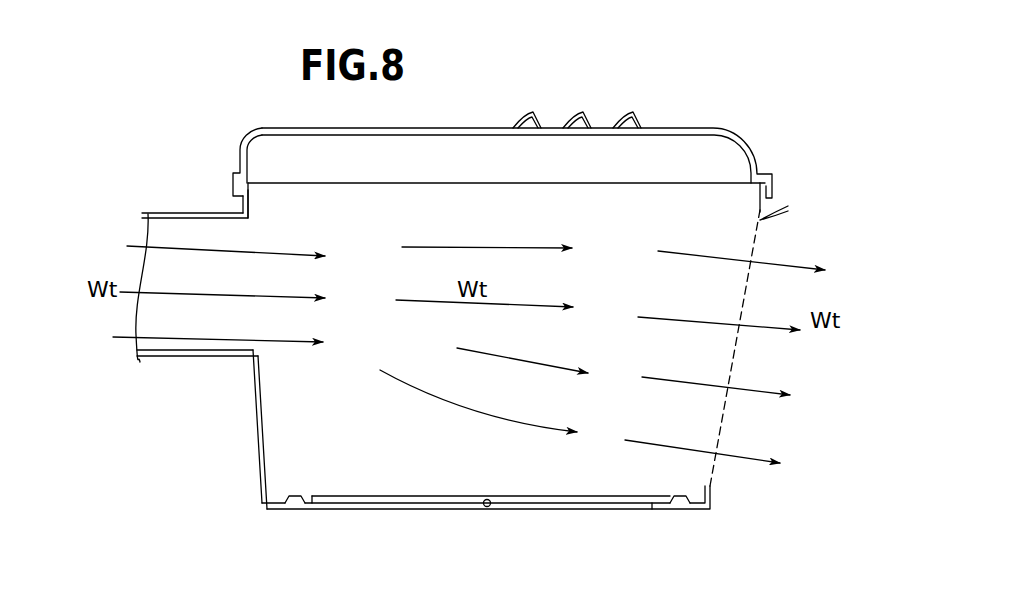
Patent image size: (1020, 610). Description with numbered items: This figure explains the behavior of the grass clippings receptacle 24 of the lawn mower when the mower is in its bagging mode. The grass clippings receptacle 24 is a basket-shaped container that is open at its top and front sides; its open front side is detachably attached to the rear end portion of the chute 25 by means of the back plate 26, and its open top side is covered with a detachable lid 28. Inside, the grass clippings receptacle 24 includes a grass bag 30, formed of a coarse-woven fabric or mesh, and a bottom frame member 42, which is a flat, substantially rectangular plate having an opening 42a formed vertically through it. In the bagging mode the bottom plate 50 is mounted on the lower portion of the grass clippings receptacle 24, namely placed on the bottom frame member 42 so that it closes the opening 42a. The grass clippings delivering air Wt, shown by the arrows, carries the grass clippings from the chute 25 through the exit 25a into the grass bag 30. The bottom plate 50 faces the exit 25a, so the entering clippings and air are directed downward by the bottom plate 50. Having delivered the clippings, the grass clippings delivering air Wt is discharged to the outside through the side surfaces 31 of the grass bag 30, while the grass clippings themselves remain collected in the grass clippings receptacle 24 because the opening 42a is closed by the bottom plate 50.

The grass clippings receptacle 24 is at (700, 524).
The chute 25 is at (183, 213).
The exit 25a is at (250, 232).
The back plate 26 is at (258, 420).
The lid 28 is at (684, 128).
The grass bag 30 is at (788, 208).
The side surfaces 31 is at (757, 240).
The bottom frame member 42 is at (308, 512).
The opening 42a is at (338, 510).
The bottom plate 50 is at (444, 505).